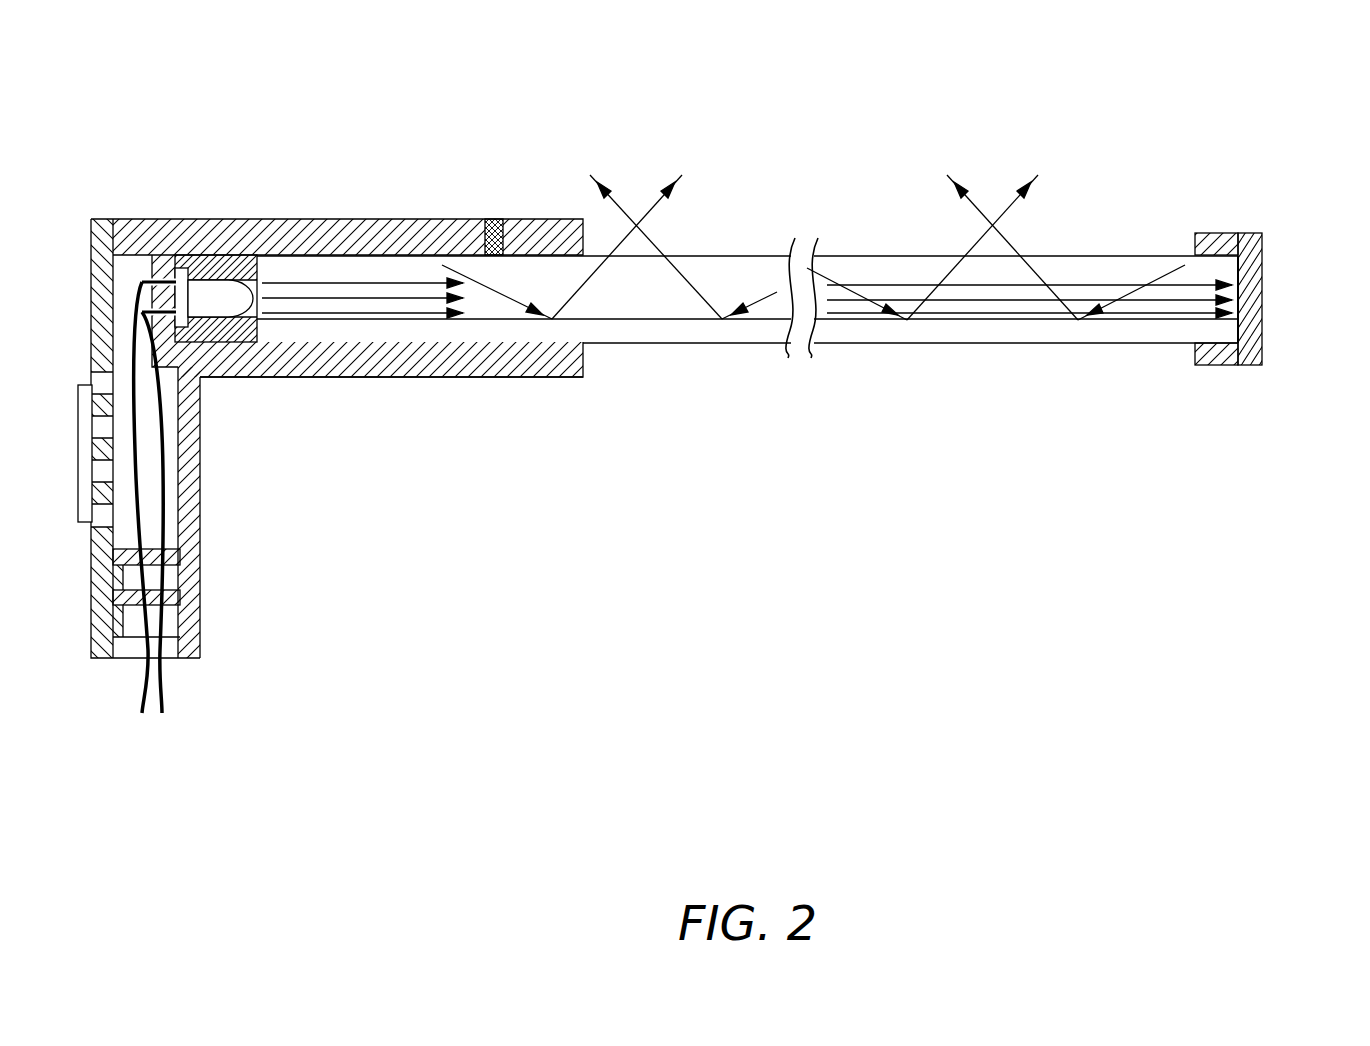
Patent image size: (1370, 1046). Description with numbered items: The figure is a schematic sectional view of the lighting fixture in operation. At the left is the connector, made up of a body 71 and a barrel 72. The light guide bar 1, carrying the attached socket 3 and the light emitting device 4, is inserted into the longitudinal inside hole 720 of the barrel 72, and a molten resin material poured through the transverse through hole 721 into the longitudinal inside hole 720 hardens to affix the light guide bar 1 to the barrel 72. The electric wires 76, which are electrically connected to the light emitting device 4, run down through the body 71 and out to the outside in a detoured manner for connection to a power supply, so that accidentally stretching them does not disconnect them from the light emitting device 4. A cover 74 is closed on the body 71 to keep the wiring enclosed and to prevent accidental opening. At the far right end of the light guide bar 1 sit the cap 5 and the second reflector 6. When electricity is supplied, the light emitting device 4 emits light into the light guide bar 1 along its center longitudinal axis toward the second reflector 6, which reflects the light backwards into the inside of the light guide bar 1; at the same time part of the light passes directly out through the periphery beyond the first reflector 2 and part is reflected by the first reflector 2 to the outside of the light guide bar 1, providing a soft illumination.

The light guide bar 1 is at (750, 277).
The first reflector 2 is at (852, 332).
The socket 3 is at (208, 262).
The light emitting device 4 is at (227, 297).
The cap 5 is at (1245, 240).
The second reflector 6 is at (1243, 327).
The body 71 is at (187, 538).
The barrel 72 is at (330, 237).
The cover 74 is at (104, 234).
The electric wires 76 is at (160, 473).
The longitudinal inside hole 720 is at (425, 357).
The transverse through hole 721 is at (487, 240).